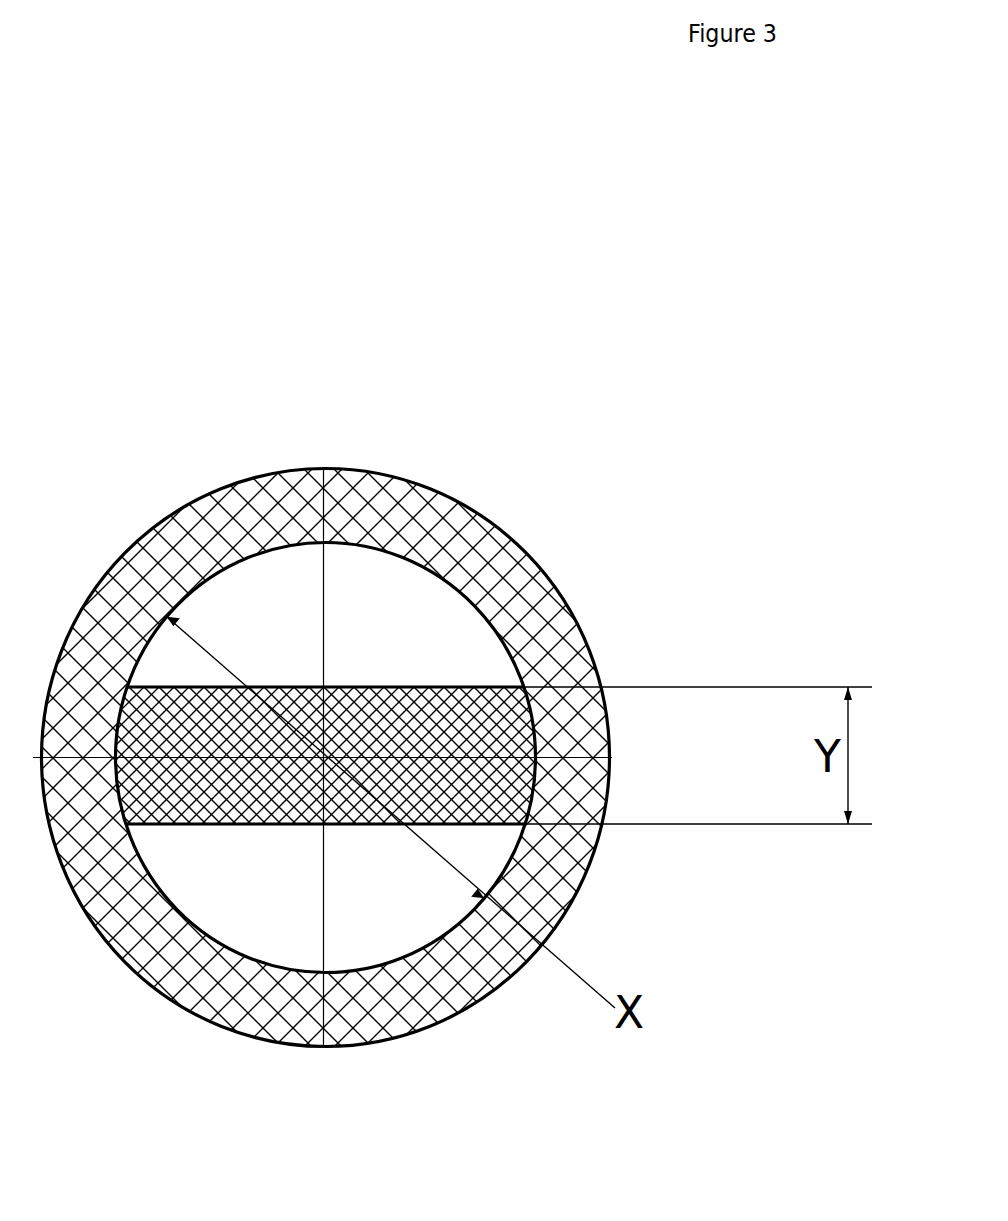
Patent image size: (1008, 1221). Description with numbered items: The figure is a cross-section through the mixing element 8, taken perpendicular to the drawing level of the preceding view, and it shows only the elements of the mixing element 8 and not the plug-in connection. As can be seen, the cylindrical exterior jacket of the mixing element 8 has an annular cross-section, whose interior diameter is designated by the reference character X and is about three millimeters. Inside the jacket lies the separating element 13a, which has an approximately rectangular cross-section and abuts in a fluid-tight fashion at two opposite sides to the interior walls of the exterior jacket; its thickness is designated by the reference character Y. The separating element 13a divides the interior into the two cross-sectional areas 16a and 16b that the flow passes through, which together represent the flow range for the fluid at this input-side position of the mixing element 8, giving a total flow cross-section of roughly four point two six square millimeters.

The mixing element 8 is at (489, 567).
The separating element 13a is at (463, 742).
The cross-sectional area 16a is at (330, 628).
The cross-sectional area 16b is at (326, 897).